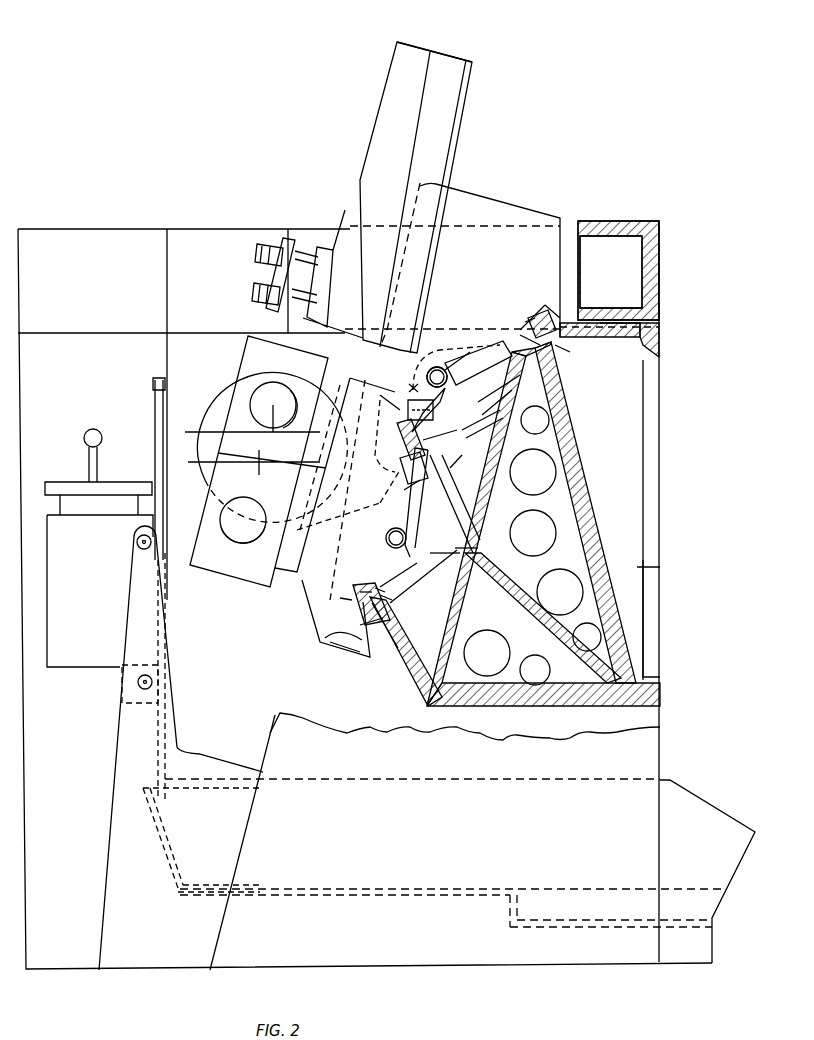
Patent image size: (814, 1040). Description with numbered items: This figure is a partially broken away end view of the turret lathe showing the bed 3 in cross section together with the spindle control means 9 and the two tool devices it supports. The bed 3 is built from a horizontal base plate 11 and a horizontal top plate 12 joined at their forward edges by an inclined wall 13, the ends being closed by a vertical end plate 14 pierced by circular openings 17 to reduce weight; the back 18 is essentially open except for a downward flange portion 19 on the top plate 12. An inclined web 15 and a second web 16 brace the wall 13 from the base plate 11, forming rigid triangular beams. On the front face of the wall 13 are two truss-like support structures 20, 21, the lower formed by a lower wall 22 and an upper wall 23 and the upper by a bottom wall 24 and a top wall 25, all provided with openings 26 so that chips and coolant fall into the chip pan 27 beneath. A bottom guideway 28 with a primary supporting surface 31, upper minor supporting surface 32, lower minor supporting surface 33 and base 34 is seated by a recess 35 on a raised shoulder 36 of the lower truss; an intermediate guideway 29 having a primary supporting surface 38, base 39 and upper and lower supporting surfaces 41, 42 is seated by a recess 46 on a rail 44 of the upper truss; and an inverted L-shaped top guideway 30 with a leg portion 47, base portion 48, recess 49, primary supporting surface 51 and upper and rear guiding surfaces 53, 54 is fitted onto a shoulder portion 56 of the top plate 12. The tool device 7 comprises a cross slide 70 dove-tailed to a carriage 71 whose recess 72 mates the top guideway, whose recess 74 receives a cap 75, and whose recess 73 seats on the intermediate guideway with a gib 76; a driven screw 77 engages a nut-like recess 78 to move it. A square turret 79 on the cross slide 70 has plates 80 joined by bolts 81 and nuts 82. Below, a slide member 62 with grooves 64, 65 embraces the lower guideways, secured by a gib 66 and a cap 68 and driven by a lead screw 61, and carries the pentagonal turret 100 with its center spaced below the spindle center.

The bed 3 is at (408, 688).
The tool device 7 is at (432, 44).
The control means 9 is at (88, 452).
The base plate 11 is at (562, 694).
The top plate 12 is at (636, 345).
The inclined wall 13 is at (455, 548).
The end plates 14 is at (660, 567).
The inclined web 15 is at (548, 622).
The web 16 is at (543, 534).
The circular openings 17 is at (523, 567).
The back 18 is at (660, 512).
The flange portion 19 is at (660, 347).
The truss-like support structure 20 is at (405, 630).
The truss-like support structure 21 is at (444, 476).
The lower wall 22 is at (418, 650).
The upper wall 23 is at (441, 572).
The bottom wall 24 is at (463, 482).
The top wall 25 is at (470, 447).
The openings 26 is at (410, 670).
The chip pan 27 is at (683, 800).
The bottom guideway 28 is at (345, 622).
The intermediate guideway 29 is at (398, 408).
The top guideway 30 is at (535, 305).
The primary supporting surface 31 is at (345, 602).
The upper minor supporting surface 32 is at (362, 595).
The lower minor supporting surface 33 is at (368, 652).
The base 34 is at (386, 590).
The recess 35 is at (377, 634).
The raised shoulder 36 is at (378, 588).
The primary supporting surface 38 is at (400, 433).
The base 39 is at (449, 441).
The upper supporting surface 41 is at (424, 389).
The lower supporting surface 42 is at (400, 463).
The rail 44 is at (443, 417).
The recess 46 is at (404, 492).
The leg portion 47 is at (510, 346).
The base portion 48 is at (575, 318).
The recess 49 is at (568, 355).
The primary supporting surface 51 is at (528, 318).
The upper guiding surface 53 is at (545, 305).
The rear guiding surface 54 is at (580, 320).
The shoulder portion 56 is at (535, 405).
The lead screw 61 is at (407, 538).
The slide member 62 is at (305, 590).
The groove 64 is at (330, 642).
The groove 65 is at (408, 376).
The gib 66 is at (350, 652).
The cap 68 is at (447, 380).
The cross slide 70 is at (392, 102).
The carriage 71 is at (483, 199).
The recess 72 is at (525, 325).
The recess 73 is at (388, 421).
The recess 74 is at (553, 300).
The cap 75 is at (572, 318).
The gib 76 is at (388, 487).
The driven screw 77 is at (446, 368).
The nut-like recess 78 is at (436, 366).
The square turret 79 is at (283, 236).
The plates 80 is at (346, 226).
The bolts 81 is at (293, 252).
The nuts 82 is at (255, 270).
The turret 100 is at (254, 585).